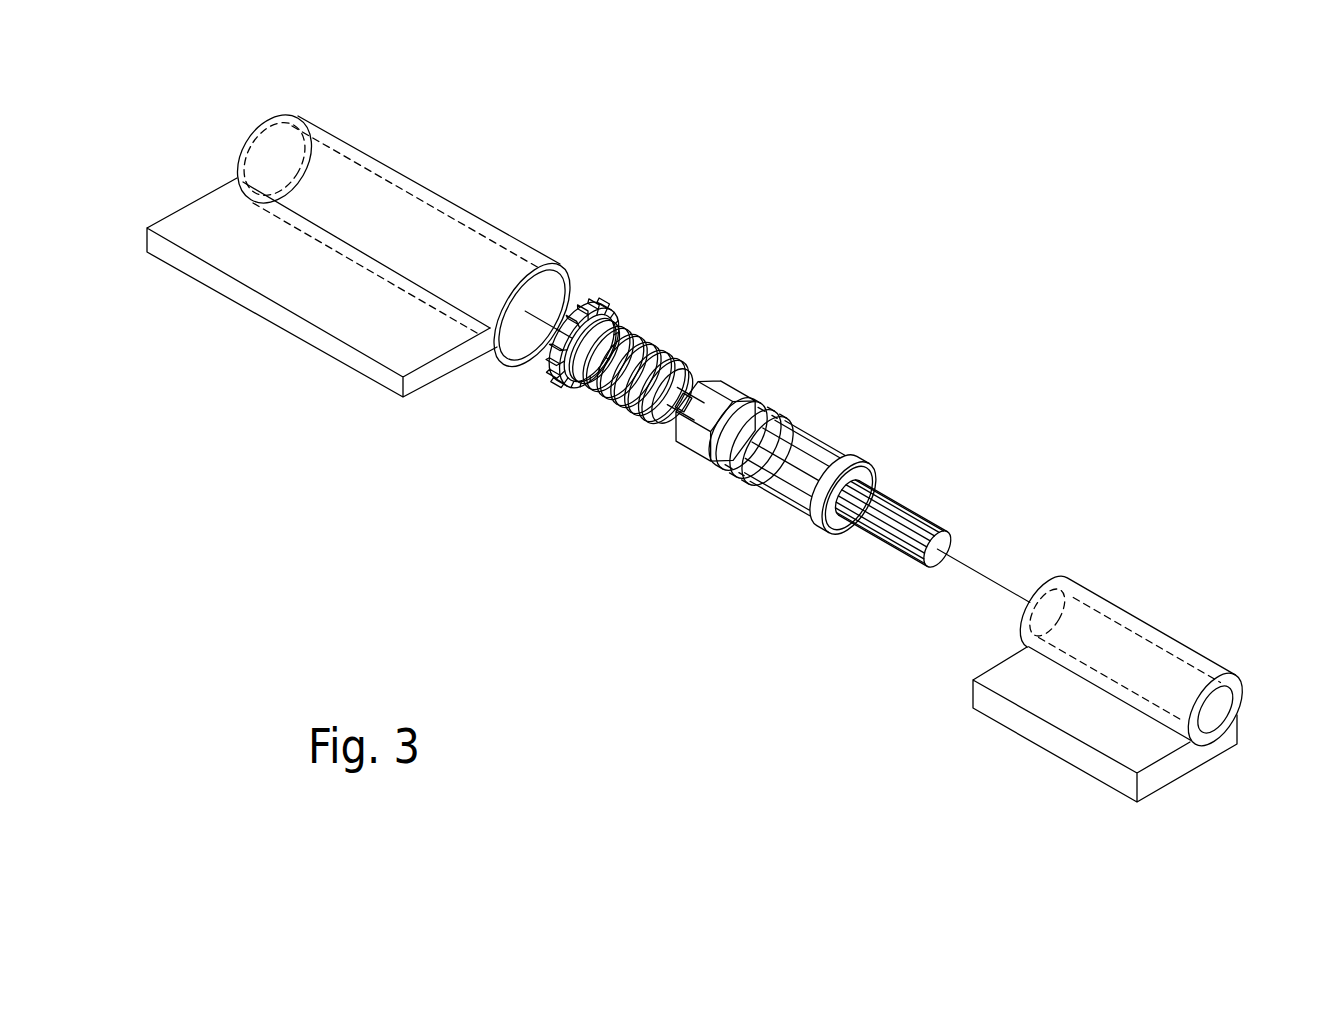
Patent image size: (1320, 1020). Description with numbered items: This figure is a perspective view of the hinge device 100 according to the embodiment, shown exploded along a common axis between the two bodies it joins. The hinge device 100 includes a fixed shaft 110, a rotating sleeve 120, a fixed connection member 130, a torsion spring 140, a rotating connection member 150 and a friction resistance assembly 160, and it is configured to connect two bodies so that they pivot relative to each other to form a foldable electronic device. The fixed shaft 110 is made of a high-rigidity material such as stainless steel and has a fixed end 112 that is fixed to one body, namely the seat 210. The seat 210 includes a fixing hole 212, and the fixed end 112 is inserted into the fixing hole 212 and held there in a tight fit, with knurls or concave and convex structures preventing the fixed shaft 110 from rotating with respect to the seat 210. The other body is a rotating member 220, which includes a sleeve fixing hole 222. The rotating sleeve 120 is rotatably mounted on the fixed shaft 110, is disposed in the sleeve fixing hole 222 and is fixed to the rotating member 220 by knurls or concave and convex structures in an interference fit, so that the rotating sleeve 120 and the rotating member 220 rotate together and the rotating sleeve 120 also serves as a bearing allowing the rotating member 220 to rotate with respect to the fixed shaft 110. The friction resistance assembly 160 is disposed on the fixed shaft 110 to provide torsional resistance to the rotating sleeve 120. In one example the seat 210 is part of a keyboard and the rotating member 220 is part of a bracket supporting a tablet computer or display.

The hinge device 100 is at (962, 323).
The fixed shaft 110 is at (939, 482).
The fixed end 112 is at (880, 548).
The rotating sleeve 120 is at (834, 438).
The fixed connection member 130 is at (669, 412).
The torsion spring 140 is at (651, 338).
The rotating connection member 150 is at (611, 286).
The friction resistance assembly 160 is at (716, 490).
The seat 210 is at (1165, 627).
The fixing hole 212 is at (1092, 612).
The rotating member 220 is at (453, 200).
The sleeve fixing hole 222 is at (379, 182).